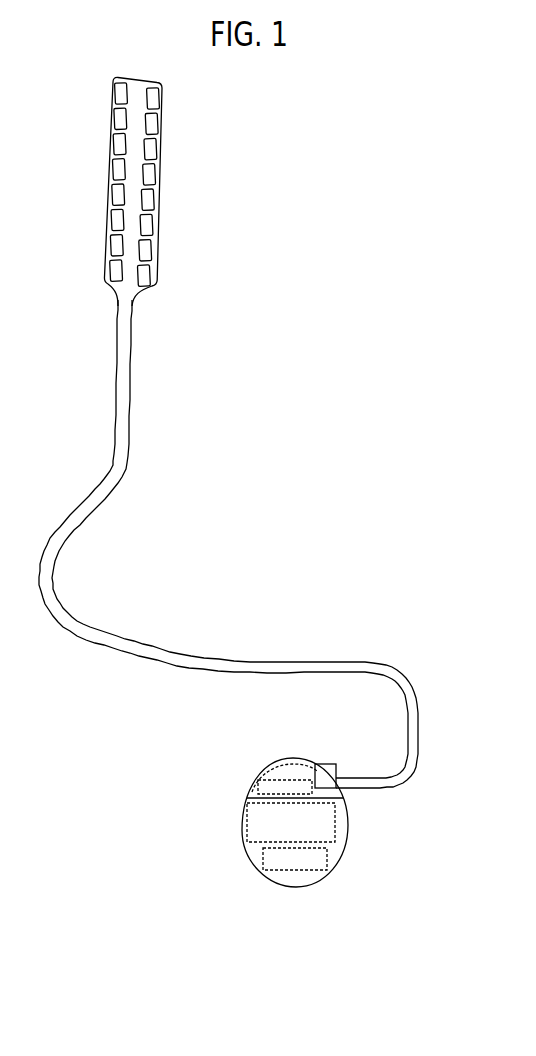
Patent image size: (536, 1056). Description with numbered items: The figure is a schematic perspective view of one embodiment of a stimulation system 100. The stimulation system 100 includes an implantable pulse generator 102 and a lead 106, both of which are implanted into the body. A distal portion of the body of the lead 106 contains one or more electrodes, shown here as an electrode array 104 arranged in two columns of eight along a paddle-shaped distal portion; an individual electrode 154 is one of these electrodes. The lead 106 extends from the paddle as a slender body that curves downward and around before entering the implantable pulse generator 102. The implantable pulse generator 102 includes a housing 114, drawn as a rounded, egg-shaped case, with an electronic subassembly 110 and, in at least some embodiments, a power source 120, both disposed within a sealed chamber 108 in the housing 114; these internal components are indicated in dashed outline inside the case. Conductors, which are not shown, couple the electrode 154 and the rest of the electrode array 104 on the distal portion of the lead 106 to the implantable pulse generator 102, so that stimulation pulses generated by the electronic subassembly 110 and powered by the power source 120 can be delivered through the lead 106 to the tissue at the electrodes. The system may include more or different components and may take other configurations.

The stimulation system 100 is at (345, 273).
The implantable pulse generator 102 is at (284, 810).
The electrode array 104 is at (126, 191).
The lead 106 is at (131, 410).
The sealed chamber 108 is at (255, 852).
The electronic subassembly 110 is at (292, 823).
The housing 114 is at (298, 757).
The power source 120 is at (295, 860).
The electrode 154 is at (118, 243).